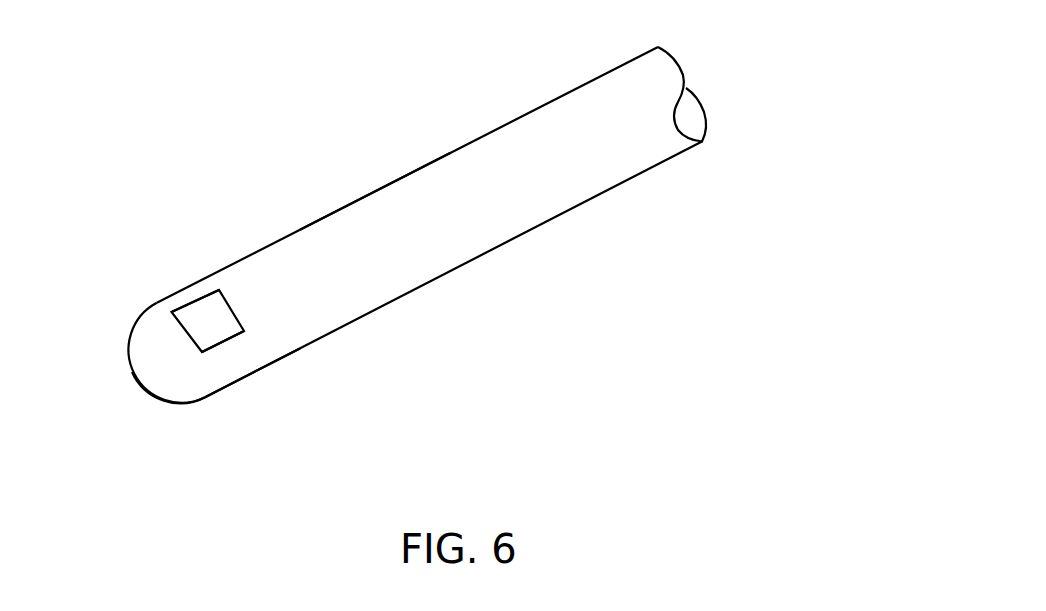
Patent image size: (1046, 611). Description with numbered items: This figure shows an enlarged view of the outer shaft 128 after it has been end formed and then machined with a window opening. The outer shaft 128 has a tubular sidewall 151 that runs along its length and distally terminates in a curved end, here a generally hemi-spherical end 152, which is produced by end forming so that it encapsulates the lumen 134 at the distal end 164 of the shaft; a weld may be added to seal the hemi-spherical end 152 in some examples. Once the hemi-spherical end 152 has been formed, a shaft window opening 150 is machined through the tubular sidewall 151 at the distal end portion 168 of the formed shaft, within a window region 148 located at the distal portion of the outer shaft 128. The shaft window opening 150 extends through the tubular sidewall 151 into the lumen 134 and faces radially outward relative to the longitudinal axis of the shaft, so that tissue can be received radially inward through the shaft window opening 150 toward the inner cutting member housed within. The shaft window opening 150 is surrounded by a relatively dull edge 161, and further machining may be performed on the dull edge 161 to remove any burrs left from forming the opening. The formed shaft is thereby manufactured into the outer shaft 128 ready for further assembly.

The outer shaft 128 is at (493, 123).
The lumen 134 is at (730, 47).
The window region 148 is at (188, 303).
The shaft window opening 150 is at (218, 308).
The tubular sidewall 151 is at (368, 178).
The hemi-spherical end 152 is at (132, 370).
The dull edge 161 is at (223, 342).
The distal end 164 is at (147, 408).
The distal end portion 168 is at (247, 383).